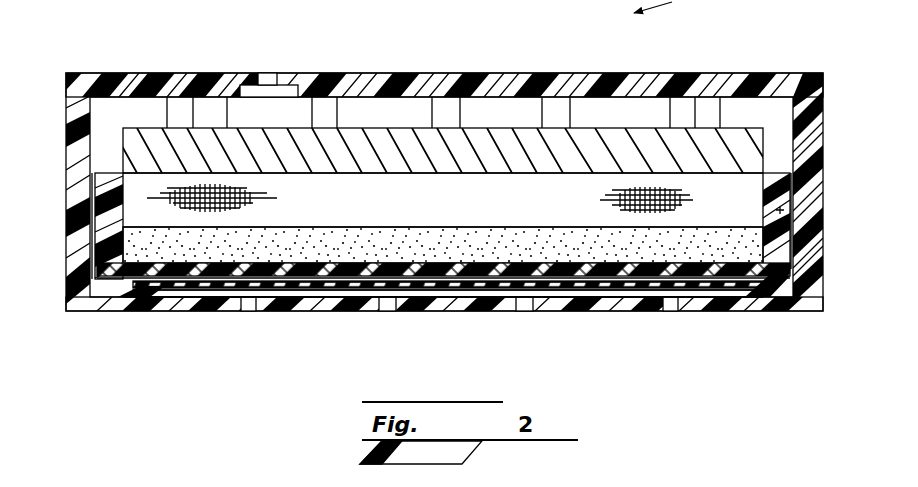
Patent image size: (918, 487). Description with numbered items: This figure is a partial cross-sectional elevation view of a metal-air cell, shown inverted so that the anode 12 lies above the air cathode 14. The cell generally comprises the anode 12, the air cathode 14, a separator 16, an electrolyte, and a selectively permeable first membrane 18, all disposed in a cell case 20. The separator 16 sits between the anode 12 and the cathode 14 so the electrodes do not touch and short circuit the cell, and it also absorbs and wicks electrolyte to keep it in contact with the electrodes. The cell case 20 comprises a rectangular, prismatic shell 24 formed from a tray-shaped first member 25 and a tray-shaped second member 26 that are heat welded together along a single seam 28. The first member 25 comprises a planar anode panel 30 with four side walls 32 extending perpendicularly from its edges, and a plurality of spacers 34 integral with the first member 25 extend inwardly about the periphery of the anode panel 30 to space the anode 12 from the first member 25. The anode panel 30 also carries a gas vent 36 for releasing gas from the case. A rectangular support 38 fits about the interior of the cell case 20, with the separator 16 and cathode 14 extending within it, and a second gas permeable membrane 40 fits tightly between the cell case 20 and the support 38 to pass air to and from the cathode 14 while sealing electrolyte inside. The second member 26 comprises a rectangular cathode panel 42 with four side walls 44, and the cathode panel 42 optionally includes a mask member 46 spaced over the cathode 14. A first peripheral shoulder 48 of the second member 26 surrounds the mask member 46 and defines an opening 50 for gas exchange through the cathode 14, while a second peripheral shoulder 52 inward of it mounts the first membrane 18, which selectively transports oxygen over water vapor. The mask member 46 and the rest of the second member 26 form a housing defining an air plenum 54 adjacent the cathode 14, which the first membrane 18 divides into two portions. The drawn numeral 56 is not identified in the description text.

The anode 12 is at (757, 132).
The air cathode 14 is at (459, 256).
The separator 16 is at (456, 207).
The selectively permeable first membrane 18 is at (482, 288).
The cell case 20 is at (101, 70).
The shell 24 is at (66, 312).
The first member 25 is at (427, 72).
The second member 26 is at (133, 313).
The seam 28 is at (66, 173).
The anode panel 30 is at (540, 72).
The side walls 32 is at (66, 97).
The spacers 34 is at (228, 108).
The gas vent 36 is at (264, 72).
The rectangular support 38 is at (800, 216).
The second gas permeable membrane 40 is at (95, 179).
The cathode panel 42 is at (463, 313).
The side walls 44 is at (66, 225).
The mask member 46 is at (340, 313).
The first peripheral shoulder 48 is at (92, 250).
The opening 50 is at (250, 264).
The second peripheral shoulder 52 is at (135, 312).
The air plenum 54 is at (265, 292).
The aperture 56 is at (250, 312).